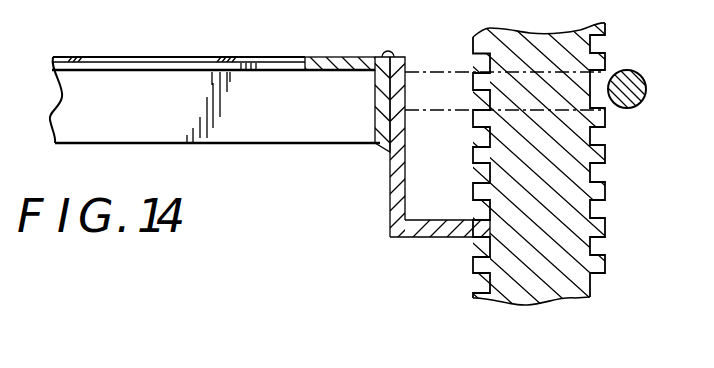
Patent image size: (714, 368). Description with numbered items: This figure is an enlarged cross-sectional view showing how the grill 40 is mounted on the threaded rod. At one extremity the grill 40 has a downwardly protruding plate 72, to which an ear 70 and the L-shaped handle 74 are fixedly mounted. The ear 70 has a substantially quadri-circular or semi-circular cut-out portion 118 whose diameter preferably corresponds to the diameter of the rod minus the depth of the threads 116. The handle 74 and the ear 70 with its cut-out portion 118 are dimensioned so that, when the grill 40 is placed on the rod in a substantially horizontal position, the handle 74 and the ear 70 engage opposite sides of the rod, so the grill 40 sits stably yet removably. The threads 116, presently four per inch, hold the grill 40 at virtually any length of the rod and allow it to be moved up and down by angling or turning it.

The grill 40 is at (330, 57).
The ear 70 is at (440, 232).
The downwardly protruding plate 72 is at (393, 166).
The handle 74 is at (630, 72).
The threads 116 is at (369, 162).
The cut-out portion 118 is at (603, 190).